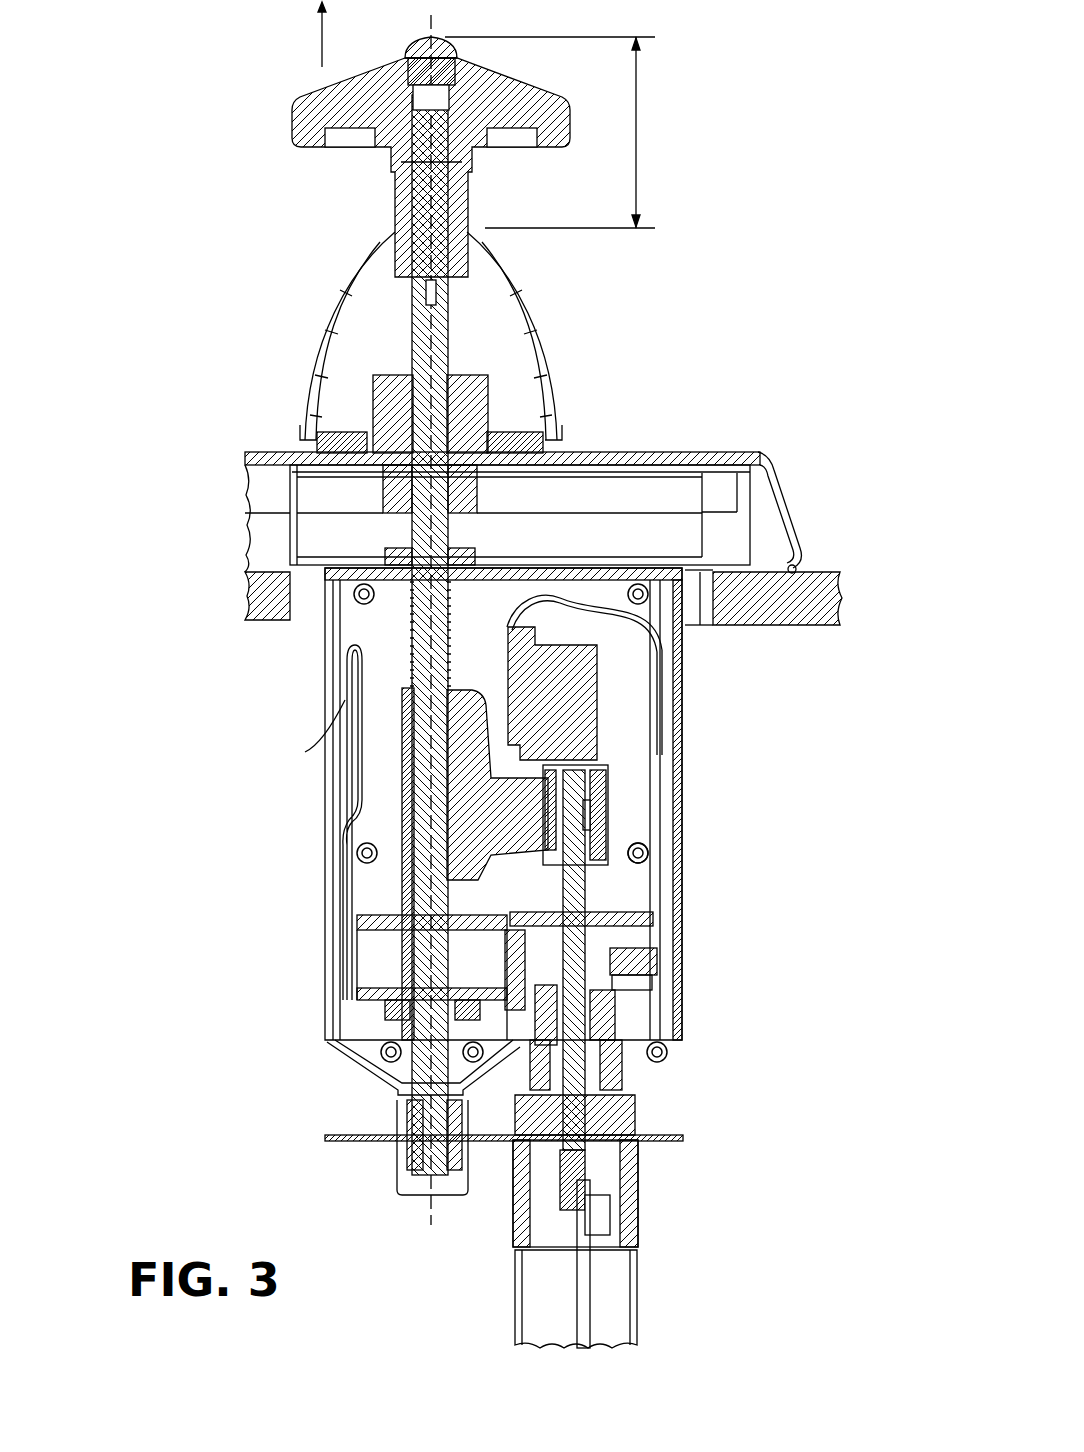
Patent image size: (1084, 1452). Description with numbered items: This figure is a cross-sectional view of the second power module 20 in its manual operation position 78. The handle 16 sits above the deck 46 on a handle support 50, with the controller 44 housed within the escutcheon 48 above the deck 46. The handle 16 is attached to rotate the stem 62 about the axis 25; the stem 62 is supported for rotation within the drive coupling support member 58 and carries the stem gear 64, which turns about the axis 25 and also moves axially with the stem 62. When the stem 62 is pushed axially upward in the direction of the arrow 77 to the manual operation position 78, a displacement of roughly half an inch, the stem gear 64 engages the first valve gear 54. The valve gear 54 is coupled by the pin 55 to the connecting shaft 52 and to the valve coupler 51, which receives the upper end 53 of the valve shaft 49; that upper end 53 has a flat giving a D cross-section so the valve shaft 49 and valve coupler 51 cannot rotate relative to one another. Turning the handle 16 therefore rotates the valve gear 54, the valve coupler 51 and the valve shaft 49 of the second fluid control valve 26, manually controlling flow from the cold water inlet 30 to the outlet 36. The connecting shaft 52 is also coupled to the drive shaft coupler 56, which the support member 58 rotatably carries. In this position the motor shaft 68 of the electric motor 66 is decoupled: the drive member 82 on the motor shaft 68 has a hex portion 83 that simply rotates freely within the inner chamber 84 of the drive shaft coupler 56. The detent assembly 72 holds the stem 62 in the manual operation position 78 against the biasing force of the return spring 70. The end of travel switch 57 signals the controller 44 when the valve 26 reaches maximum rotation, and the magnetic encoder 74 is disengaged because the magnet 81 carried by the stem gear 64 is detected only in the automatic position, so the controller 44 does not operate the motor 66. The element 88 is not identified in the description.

The arrow 77 is at (322, 37).
The handle 16 is at (297, 125).
The manual operation position 78 is at (655, 135).
The handle support 50 is at (520, 362).
The escutcheon 48 is at (765, 452).
The controller 44 is at (645, 553).
The deck 46 is at (840, 572).
The return spring 70 is at (415, 612).
The electric motor 66 is at (595, 692).
The second power module 20 is at (793, 700).
The stem 62 is at (420, 740).
The motor shaft 68 is at (620, 763).
The drive coupling support member 58 is at (410, 780).
The drive member 82 is at (600, 773).
The pin guide 88 is at (603, 792).
The hex portion 83 is at (603, 823).
The drive shaft coupler 56 is at (610, 833).
The stem gear 64 is at (357, 923).
The inner chamber 84 is at (648, 860).
The connecting shaft 52 is at (593, 890).
The first valve gear 54 is at (650, 920).
The magnet 81 is at (390, 940).
The pin 55 is at (657, 947).
The end of travel switch 57 is at (660, 973).
The valve coupler 51 is at (610, 1000).
The magnetic encoder 74 is at (393, 1017).
The upper end 53 is at (630, 1040).
The valve shaft 49 is at (620, 1093).
The detent assembly 72 is at (398, 1147).
The second fluid control valve 26 is at (642, 1172).
The axis 25 is at (431, 1218).
The outlet 36 is at (515, 1318).
The cold water inlet 30 is at (640, 1307).